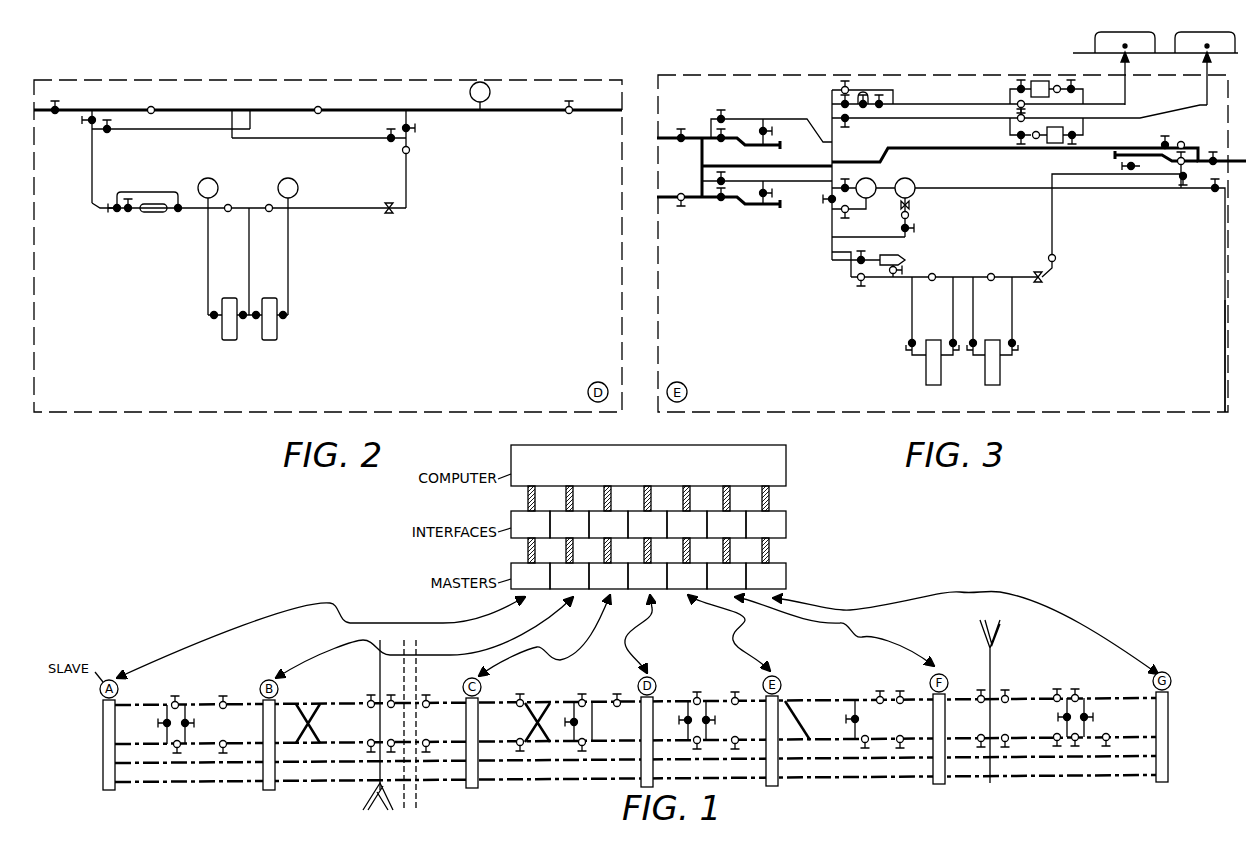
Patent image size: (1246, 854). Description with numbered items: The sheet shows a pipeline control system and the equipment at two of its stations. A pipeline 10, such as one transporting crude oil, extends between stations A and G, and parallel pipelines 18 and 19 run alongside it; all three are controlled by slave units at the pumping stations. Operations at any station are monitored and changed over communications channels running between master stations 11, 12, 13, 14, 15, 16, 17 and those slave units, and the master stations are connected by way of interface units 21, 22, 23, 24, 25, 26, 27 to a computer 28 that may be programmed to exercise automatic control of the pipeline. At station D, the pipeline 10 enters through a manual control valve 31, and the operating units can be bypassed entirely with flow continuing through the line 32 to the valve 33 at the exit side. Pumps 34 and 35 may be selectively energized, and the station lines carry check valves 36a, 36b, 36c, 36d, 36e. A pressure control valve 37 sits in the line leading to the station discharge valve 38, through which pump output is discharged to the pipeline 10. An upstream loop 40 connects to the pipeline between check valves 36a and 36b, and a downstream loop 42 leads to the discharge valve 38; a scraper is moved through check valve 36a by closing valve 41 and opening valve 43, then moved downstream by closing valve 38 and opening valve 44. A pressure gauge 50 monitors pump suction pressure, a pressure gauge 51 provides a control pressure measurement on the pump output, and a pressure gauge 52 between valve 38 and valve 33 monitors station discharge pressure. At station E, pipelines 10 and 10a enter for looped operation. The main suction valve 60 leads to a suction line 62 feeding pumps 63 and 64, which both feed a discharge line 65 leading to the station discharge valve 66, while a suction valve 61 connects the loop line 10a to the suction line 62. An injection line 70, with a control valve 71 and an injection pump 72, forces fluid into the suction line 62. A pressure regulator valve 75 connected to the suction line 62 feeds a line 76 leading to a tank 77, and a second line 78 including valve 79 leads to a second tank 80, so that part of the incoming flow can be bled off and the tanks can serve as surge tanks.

In FIG. 2, the pipeline 10 is at (50, 113).
In FIG. 3, the pipeline 10 is at (661, 141).
In FIG. 1, the pipeline 10 is at (126, 705).
In FIG. 3, the loop line 10a is at (663, 204).
In FIG. 1, the master station 11 is at (521, 586).
In FIG. 1, the master station 12 is at (560, 586).
In FIG. 1, the master station 13 is at (599, 586).
In FIG. 1, the master station 14 is at (638, 586).
In FIG. 1, the master station 15 is at (678, 586).
In FIG. 1, the master station 16 is at (717, 586).
In FIG. 1, the master station 17 is at (757, 586).
In FIG. 1, the pipeline 18 is at (127, 763).
In FIG. 1, the pipeline 19 is at (133, 787).
In FIG. 1, the interface unit 21 is at (521, 534).
In FIG. 1, the interface unit 22 is at (560, 534).
In FIG. 1, the interface unit 23 is at (599, 534).
In FIG. 1, the interface unit 24 is at (638, 534).
In FIG. 1, the interface unit 25 is at (678, 534).
In FIG. 1, the interface unit 26 is at (717, 534).
In FIG. 1, the interface unit 27 is at (757, 534).
In FIG. 1, the computer 28 is at (638, 478).
In FIG. 2, the manual control valve 31 is at (58, 108).
In FIG. 2, the line 32 is at (284, 109).
In FIG. 2, the valve 33 is at (573, 108).
In FIG. 2, the pump 34 is at (230, 299).
In FIG. 2, the pump 35 is at (270, 299).
In FIG. 2, the check valve 36a is at (153, 107).
In FIG. 2, the check valve 36b is at (321, 107).
In FIG. 2, the check valve 36c is at (228, 212).
In FIG. 2, the check valve 36d is at (269, 212).
In FIG. 2, the check valve 36e is at (409, 154).
In FIG. 2, the pressure control valve 37 is at (386, 213).
In FIG. 2, the station discharge valve 38 is at (410, 131).
In FIG. 2, the upstream loop 40 is at (167, 131).
In FIG. 2, the valve 41 is at (89, 123).
In FIG. 2, the downstream loop 42 is at (315, 140).
In FIG. 2, the valve 43 is at (110, 132).
In FIG. 2, the valve 44 is at (388, 140).
In FIG. 2, the pressure gauge 50 is at (217, 184).
In FIG. 2, the pressure gauge 51 is at (297, 184).
In FIG. 2, the pressure gauge 52 is at (490, 92).
In FIG. 3, the main suction valve 60 is at (724, 116).
In FIG. 3, the suction valve 61 is at (724, 178).
In FIG. 3, the suction line 62 is at (836, 151).
In FIG. 3, the pump 63 is at (932, 344).
In FIG. 3, the pump 64 is at (992, 344).
In FIG. 3, the discharge line 65 is at (1053, 226).
In FIG. 3, the station discharge valve 66 is at (1178, 180).
In FIG. 3, the injection line 70 is at (1224, 302).
In FIG. 3, the control valve 71 is at (1216, 193).
In FIG. 3, the injection pump 72 is at (908, 184).
In FIG. 3, the pressure regulator valve 75 is at (866, 92).
In FIG. 3, the line 76 is at (922, 103).
In FIG. 3, the tank 77 is at (1097, 36).
In FIG. 3, the second line 78 is at (922, 118).
In FIG. 3, the valve 79 is at (850, 120).
In FIG. 3, the second tank 80 is at (1180, 34).